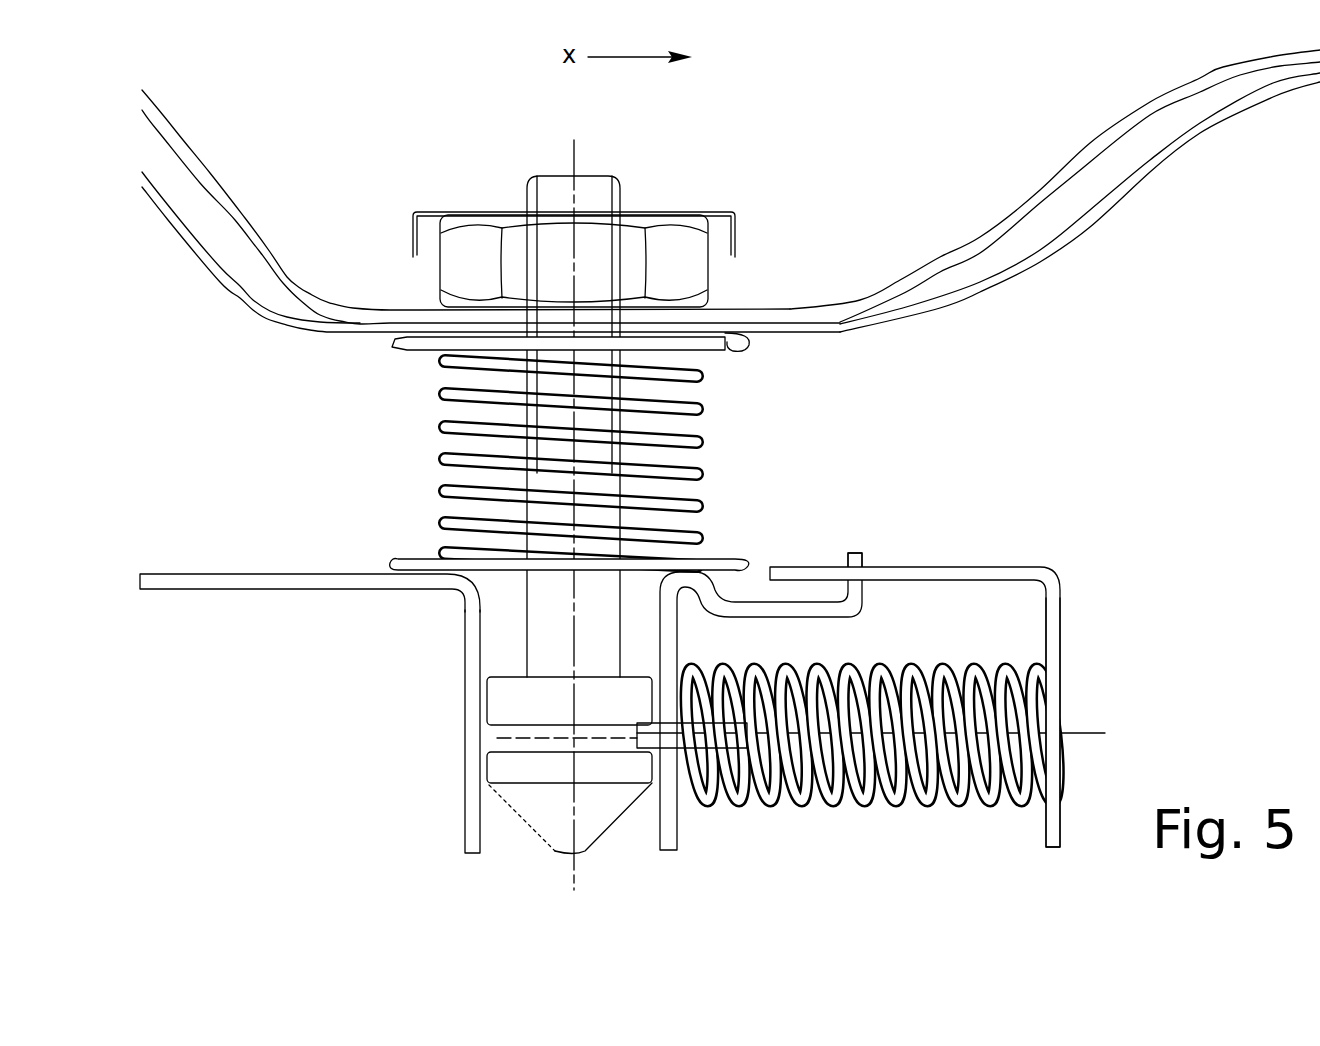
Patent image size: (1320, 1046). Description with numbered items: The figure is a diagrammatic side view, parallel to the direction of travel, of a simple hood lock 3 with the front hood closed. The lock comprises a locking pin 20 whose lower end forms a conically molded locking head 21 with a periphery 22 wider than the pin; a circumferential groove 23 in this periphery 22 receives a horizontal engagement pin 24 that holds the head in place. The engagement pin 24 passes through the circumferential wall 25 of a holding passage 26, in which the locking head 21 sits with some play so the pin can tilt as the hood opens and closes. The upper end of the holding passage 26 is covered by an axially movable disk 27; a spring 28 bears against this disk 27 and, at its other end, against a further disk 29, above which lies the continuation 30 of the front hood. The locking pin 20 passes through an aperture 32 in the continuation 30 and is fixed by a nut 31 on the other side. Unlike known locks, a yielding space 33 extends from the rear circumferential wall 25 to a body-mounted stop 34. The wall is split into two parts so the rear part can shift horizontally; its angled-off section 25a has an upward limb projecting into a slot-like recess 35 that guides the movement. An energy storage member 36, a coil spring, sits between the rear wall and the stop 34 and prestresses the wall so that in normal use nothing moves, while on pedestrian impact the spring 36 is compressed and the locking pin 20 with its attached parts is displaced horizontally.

The hood lock 3 is at (905, 389).
The locking pin 20 is at (532, 612).
The locking head 21 is at (512, 772).
The periphery 22 is at (487, 702).
The circumferential groove 23 is at (503, 738).
The engagement pin 24 is at (642, 815).
The circumferential wall 25 is at (472, 830).
The angled-off section 25a is at (786, 618).
The holding passage 26 is at (662, 646).
The disk 27 is at (717, 560).
The spring 28 is at (700, 433).
The further disk 29 is at (748, 351).
The continuation 30 is at (787, 307).
The nut 31 is at (697, 268).
The aperture 32 is at (517, 313).
The yielding space 33 is at (903, 847).
The stop 34 is at (1058, 612).
The slot-like recess 35 is at (930, 568).
The energy storage member 36 is at (912, 662).